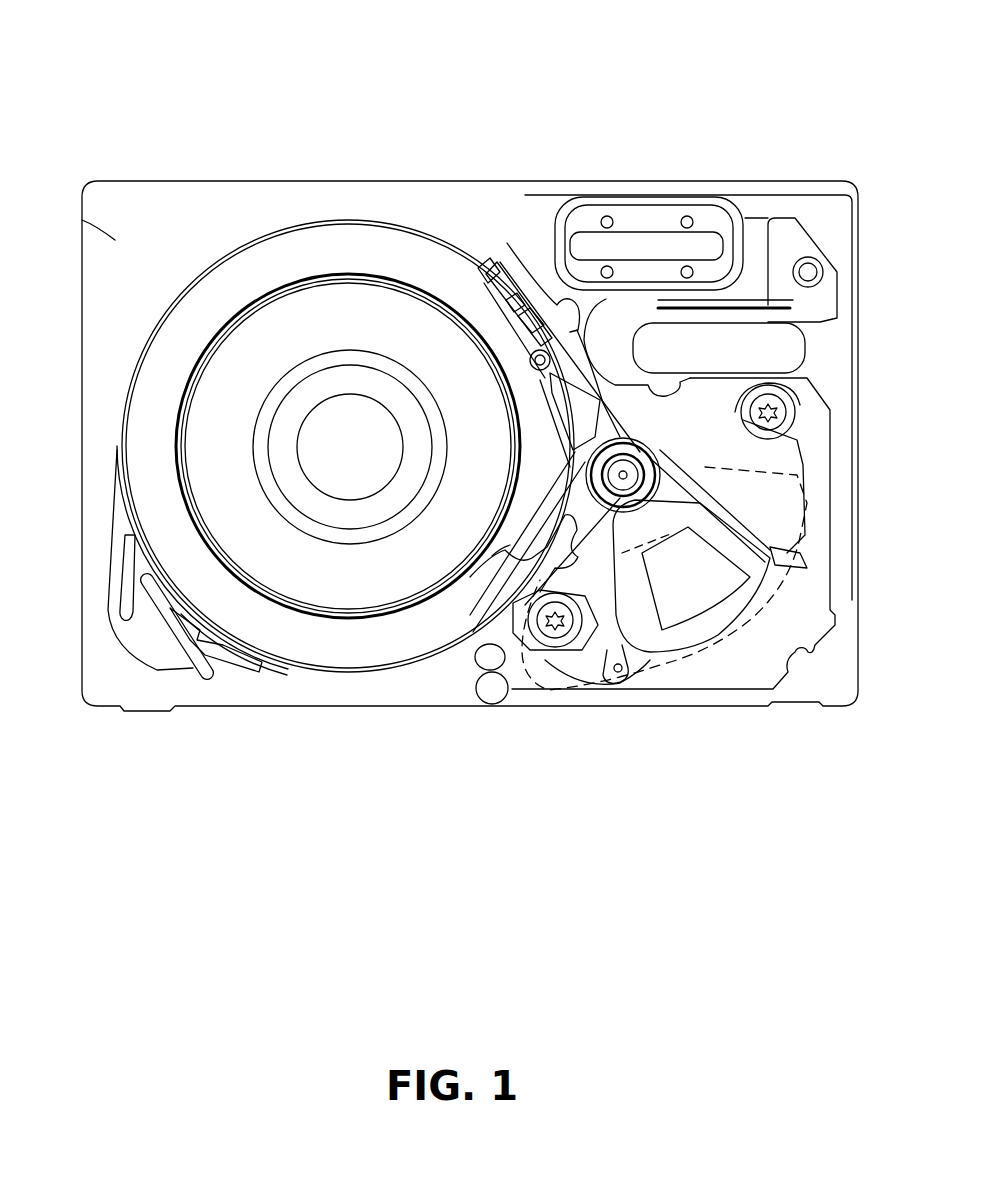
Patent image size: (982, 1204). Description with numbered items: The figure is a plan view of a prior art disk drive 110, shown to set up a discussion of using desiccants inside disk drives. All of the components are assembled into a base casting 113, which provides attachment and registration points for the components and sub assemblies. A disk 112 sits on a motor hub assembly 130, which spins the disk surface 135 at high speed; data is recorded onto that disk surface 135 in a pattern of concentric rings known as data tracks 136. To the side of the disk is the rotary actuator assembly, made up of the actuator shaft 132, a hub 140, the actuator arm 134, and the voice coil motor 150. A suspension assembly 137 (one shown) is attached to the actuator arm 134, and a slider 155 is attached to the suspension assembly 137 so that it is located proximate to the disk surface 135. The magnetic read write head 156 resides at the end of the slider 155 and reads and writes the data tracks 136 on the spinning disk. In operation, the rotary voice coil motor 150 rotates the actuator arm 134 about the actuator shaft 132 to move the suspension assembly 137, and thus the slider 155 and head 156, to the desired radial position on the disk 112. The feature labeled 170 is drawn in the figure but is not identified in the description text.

The disk drive 110 is at (168, 120).
The disk 112 is at (210, 262).
The base casting 113 is at (103, 405).
The motor hub assembly 130 is at (350, 440).
The actuator shaft 132 is at (623, 478).
The actuator arm 134 is at (582, 372).
The disk surface 135 is at (275, 270).
The data tracks 136 is at (182, 512).
The suspension assembly 137 is at (507, 243).
The hub 140 is at (492, 556).
The voice coil motor 150 is at (697, 652).
The slider 155 is at (484, 262).
The magnetic read write head 156 is at (481, 260).
The connector holes 170 is at (478, 660).